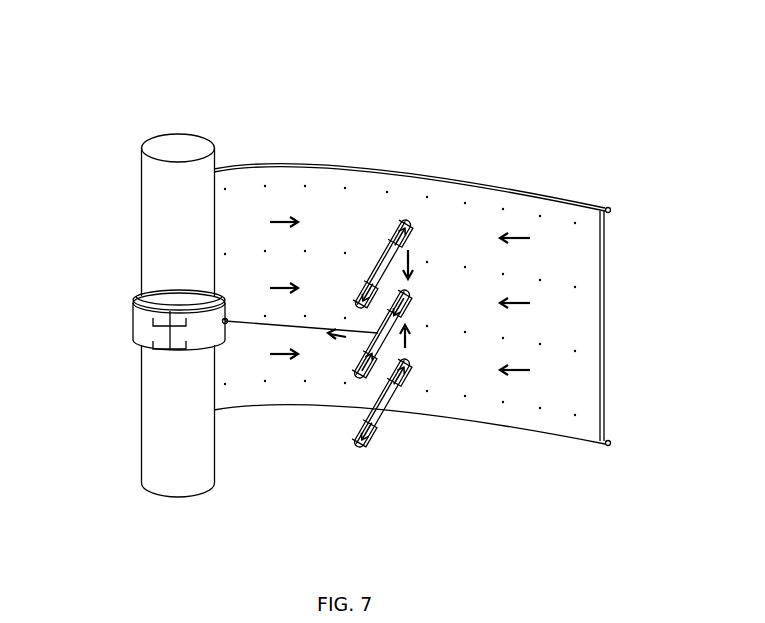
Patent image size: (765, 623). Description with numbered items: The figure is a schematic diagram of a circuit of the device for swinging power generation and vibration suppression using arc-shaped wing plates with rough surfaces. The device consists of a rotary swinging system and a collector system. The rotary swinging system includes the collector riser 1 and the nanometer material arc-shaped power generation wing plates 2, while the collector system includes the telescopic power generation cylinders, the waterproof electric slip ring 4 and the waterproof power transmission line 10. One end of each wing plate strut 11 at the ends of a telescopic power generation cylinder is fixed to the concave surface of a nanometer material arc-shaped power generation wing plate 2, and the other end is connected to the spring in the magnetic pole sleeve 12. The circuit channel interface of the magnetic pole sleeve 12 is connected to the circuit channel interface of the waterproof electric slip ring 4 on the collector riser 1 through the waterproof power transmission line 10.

The collector riser 1 is at (183, 152).
The nanometer material arc-shaped power generation wing plate 2 is at (327, 182).
The waterproof electric slip ring 4 is at (133, 320).
The waterproof power transmission line 10 is at (277, 323).
The wing plate strut 11 is at (407, 222).
The magnetic pole sleeve 12 is at (397, 253).